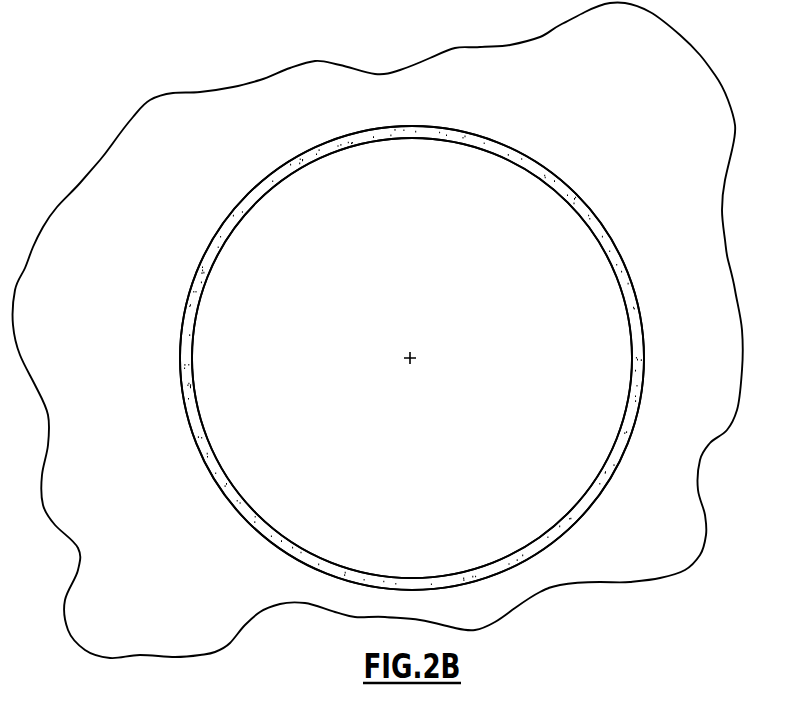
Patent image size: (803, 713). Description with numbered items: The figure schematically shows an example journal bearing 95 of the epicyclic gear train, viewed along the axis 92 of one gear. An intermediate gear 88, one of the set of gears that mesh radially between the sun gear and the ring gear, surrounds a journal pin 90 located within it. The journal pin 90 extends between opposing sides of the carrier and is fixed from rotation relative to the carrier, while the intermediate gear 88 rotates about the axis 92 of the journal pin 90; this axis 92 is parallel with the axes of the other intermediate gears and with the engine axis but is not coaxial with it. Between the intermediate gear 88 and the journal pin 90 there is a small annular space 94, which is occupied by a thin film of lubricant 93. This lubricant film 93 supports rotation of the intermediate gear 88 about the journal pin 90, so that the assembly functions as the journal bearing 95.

The intermediate gear 88 is at (90, 507).
The journal pin 90 is at (383, 466).
The axis 92 is at (417, 352).
The thin film of lubricant 93 is at (272, 182).
The annular space 94 is at (193, 281).
The journal bearing 95 is at (567, 162).